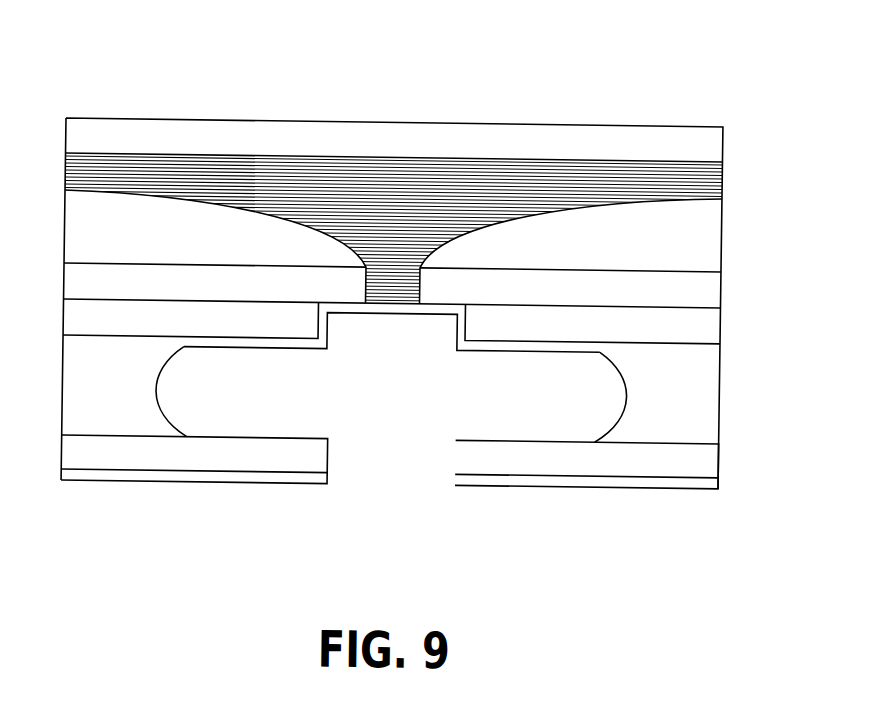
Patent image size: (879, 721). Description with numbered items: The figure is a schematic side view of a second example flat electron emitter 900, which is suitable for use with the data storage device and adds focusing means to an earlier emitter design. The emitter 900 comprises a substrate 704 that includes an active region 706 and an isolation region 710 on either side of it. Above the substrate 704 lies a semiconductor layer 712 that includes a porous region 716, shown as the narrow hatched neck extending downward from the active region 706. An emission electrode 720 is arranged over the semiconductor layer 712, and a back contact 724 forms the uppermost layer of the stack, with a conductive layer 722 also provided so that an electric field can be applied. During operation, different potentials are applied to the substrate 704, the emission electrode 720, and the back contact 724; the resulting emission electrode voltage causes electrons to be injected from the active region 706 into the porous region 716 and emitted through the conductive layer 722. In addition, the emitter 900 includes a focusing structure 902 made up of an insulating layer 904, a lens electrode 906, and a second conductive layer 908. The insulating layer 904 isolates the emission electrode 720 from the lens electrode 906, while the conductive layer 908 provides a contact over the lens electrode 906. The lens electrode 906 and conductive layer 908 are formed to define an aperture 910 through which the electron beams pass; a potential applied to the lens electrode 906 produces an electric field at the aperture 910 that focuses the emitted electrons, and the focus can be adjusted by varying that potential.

The flat electron emitter 900 is at (719, 68).
The back contact 724 is at (723, 136).
The substrate 704 is at (723, 219).
The active region 706 is at (416, 212).
The isolation region 710 is at (196, 245).
The semiconductor layer 712 is at (722, 264).
The porous region 716 is at (412, 287).
The emission electrode 720 is at (722, 336).
The conductive layer 722 is at (497, 346).
The focusing structure 902 is at (740, 336).
The insulating layer 904 is at (152, 386).
The lens electrode 906 is at (211, 453).
The second conductive layer 908 is at (115, 474).
The aperture 910 is at (437, 514).